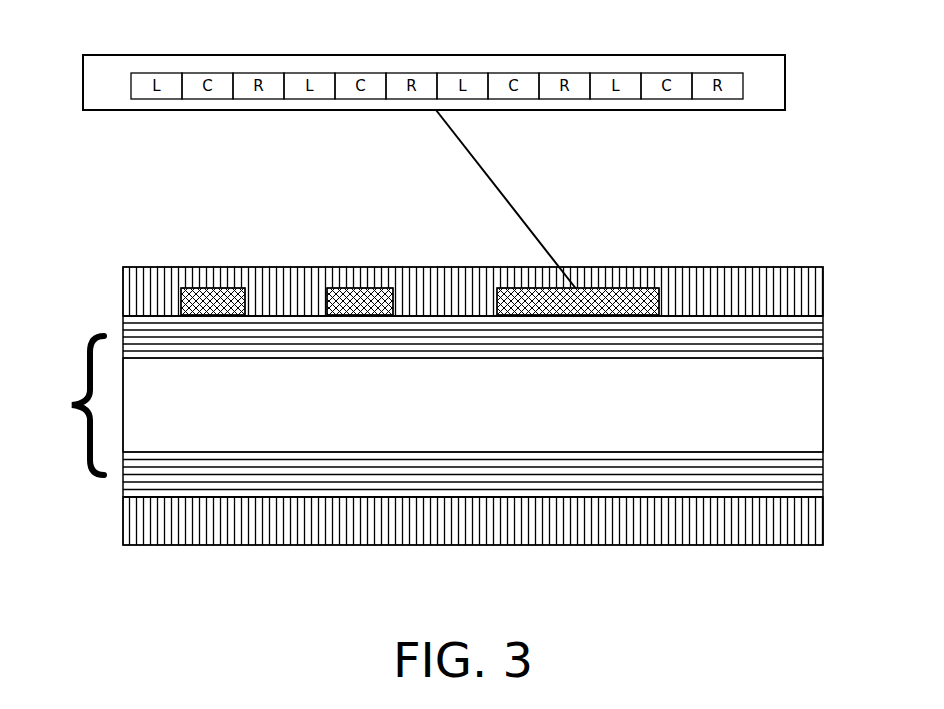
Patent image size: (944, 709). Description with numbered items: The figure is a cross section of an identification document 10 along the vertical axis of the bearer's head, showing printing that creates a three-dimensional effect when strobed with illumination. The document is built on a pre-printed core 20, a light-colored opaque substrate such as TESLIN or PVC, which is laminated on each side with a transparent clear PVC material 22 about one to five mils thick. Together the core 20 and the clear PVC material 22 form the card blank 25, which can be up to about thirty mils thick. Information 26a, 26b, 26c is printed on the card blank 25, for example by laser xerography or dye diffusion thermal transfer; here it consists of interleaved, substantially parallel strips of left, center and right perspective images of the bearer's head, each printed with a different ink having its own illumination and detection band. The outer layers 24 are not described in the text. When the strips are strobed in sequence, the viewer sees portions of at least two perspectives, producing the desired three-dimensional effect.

The ID document 10 is at (93, 283).
The core 20 is at (823, 407).
The clear PVC material 22 is at (823, 326).
The electrode layer 24 is at (755, 268).
The card blank 25 is at (423, 405).
The information 26a is at (221, 290).
The information 26b is at (366, 290).
The information 26c is at (577, 290).